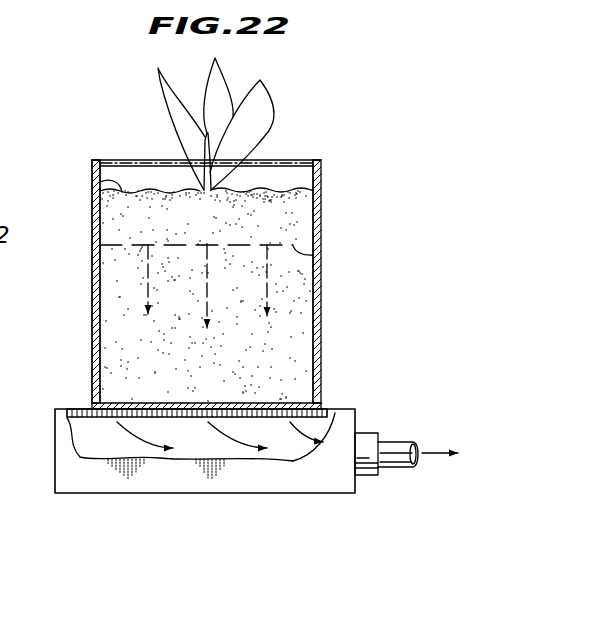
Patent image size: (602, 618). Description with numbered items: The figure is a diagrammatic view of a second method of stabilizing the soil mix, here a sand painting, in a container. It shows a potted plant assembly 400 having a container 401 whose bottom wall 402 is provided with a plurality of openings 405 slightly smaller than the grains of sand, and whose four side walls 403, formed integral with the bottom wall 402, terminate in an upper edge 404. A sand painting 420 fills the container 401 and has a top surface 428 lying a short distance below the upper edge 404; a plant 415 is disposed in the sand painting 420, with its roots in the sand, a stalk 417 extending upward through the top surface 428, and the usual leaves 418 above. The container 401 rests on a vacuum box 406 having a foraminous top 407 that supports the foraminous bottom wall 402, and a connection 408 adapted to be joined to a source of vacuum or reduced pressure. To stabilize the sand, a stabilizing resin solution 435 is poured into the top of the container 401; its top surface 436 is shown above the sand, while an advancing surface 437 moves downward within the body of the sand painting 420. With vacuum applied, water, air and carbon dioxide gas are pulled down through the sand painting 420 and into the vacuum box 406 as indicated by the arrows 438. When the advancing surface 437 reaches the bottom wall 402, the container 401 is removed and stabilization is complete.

The potted plant assembly 400 is at (133, 88).
The container 401 is at (90, 248).
The bottom wall 402 is at (287, 408).
The side walls 403 is at (321, 285).
The upper edge 404 is at (93, 160).
The openings 405 is at (273, 404).
The vacuum box 406 is at (52, 472).
The foraminous top 407 is at (163, 418).
The connection 408 is at (403, 466).
The plant 415 is at (200, 137).
The liquid level line 417 is at (247, 165).
The leaves 418 is at (260, 80).
The sand painting 420 is at (118, 355).
The top surface 428 is at (100, 182).
The stabilizing resin solution 435 is at (313, 187).
The top surface of resin solution 436 is at (288, 161).
The advancing surface 437 is at (313, 255).
The arrows 438 is at (303, 420).